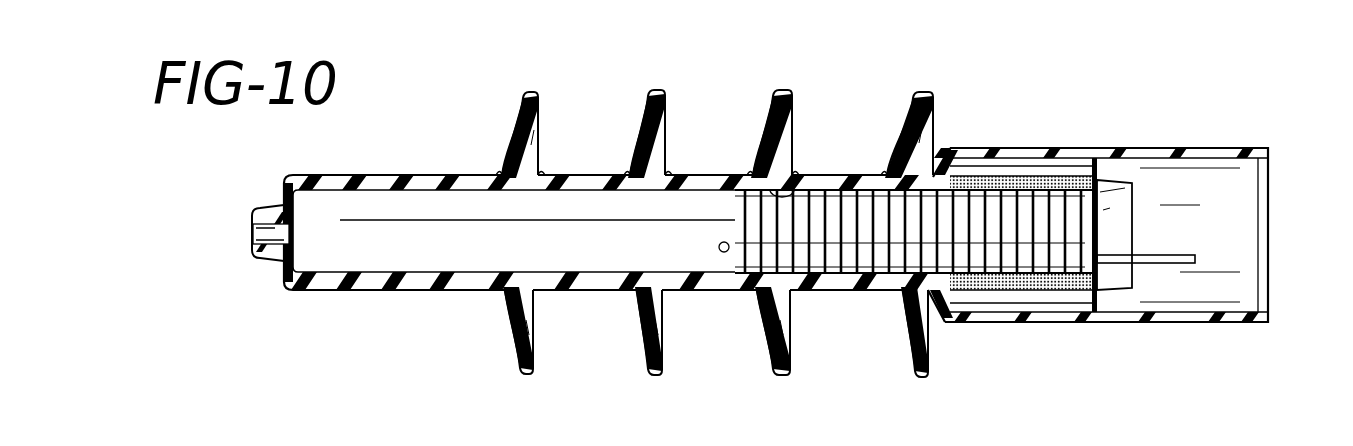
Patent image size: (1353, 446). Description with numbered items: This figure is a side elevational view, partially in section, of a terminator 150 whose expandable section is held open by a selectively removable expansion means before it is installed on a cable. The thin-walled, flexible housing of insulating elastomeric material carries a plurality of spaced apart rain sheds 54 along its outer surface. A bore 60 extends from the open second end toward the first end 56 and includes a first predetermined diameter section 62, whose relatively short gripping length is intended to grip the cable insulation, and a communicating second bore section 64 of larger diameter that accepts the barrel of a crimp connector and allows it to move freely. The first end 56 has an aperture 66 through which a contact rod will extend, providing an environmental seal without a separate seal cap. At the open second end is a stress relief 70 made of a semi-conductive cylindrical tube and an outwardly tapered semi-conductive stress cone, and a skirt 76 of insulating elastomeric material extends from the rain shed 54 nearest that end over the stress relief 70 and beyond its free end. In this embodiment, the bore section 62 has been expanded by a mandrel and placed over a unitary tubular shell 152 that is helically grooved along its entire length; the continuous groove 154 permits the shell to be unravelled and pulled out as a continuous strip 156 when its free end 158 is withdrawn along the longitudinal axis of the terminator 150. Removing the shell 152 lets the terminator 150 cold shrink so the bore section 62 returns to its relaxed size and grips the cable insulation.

The rain sheds 54 is at (645, 95).
The first end 56 is at (256, 212).
The bore 60 is at (394, 256).
The first predetermined diameter section 62 is at (812, 200).
The second bore section 64 is at (338, 190).
The aperture 66 is at (258, 237).
The stress relief 70 is at (1000, 178).
The skirt 76 is at (1133, 323).
The terminator 150 is at (737, 86).
The unitary tubular shell 152 is at (835, 207).
The continuous groove 154 is at (845, 280).
The continuous strip 156 is at (1117, 253).
The free end 158 is at (1190, 260).